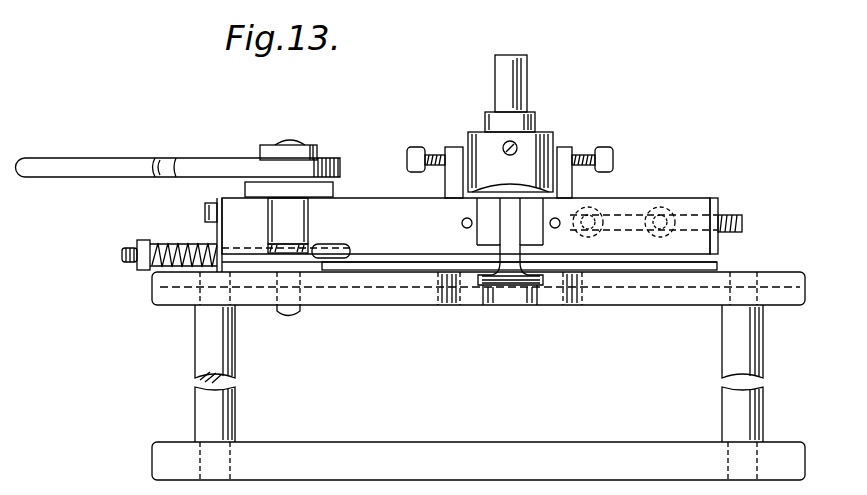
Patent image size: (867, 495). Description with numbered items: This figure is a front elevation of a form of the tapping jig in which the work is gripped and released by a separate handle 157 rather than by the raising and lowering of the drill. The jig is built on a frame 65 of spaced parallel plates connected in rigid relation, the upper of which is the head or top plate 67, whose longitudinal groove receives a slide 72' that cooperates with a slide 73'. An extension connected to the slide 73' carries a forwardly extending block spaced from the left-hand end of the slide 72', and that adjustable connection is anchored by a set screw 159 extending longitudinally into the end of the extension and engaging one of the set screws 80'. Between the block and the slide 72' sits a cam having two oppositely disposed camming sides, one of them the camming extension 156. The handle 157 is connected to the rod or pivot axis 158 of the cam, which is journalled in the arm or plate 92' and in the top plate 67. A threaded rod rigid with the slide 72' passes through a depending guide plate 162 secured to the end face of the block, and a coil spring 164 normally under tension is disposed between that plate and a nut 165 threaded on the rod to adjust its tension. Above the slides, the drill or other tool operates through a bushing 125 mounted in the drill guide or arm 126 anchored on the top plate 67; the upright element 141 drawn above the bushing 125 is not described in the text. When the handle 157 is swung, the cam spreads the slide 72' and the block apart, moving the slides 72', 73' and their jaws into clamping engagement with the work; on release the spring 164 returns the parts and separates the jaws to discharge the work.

The handle 157 is at (74, 163).
The arm or plate 92' is at (307, 162).
The spindle 141 is at (516, 97).
The bushing 125 is at (533, 122).
The drill guide or arm 126 is at (535, 143).
The slide 72' is at (348, 223).
The slide 73' is at (527, 218).
The set screws 80' is at (643, 204).
The set screw 159 is at (736, 216).
The depending guide plate 162 is at (217, 200).
The camming side or extension 156 is at (290, 232).
The nut 165 is at (123, 253).
The coil spring 164 is at (165, 262).
The top plate 67 is at (401, 295).
The rod or pivot axis 158 is at (291, 319).
The frame 65 is at (186, 365).